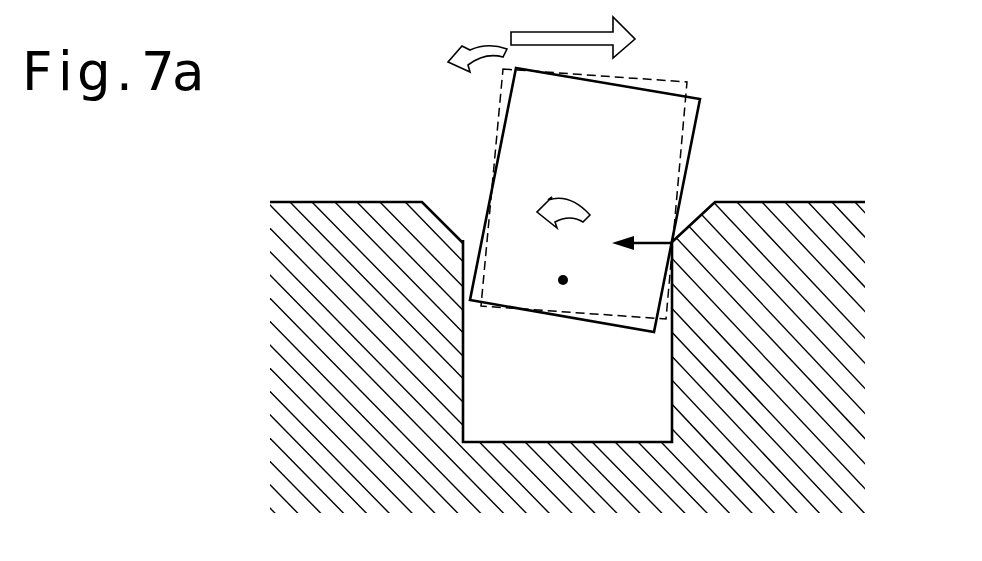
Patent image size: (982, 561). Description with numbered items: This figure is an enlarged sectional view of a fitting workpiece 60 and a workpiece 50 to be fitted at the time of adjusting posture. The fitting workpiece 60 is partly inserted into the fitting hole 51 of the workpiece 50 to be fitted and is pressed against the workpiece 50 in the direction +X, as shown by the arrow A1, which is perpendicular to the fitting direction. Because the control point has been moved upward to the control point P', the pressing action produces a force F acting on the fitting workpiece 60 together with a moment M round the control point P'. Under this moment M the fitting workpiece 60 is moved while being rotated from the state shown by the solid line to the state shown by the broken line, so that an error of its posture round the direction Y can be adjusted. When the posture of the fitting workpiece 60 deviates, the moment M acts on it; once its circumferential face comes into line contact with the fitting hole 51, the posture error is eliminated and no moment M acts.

The workpiece to be fitted 50 is at (348, 232).
The fitting hole 51 is at (463, 413).
The fitting workpiece 60 is at (647, 118).
The arrow A1 is at (541, 38).
The moment M is at (570, 203).
The force F is at (650, 240).
The control point P' is at (497, 219).